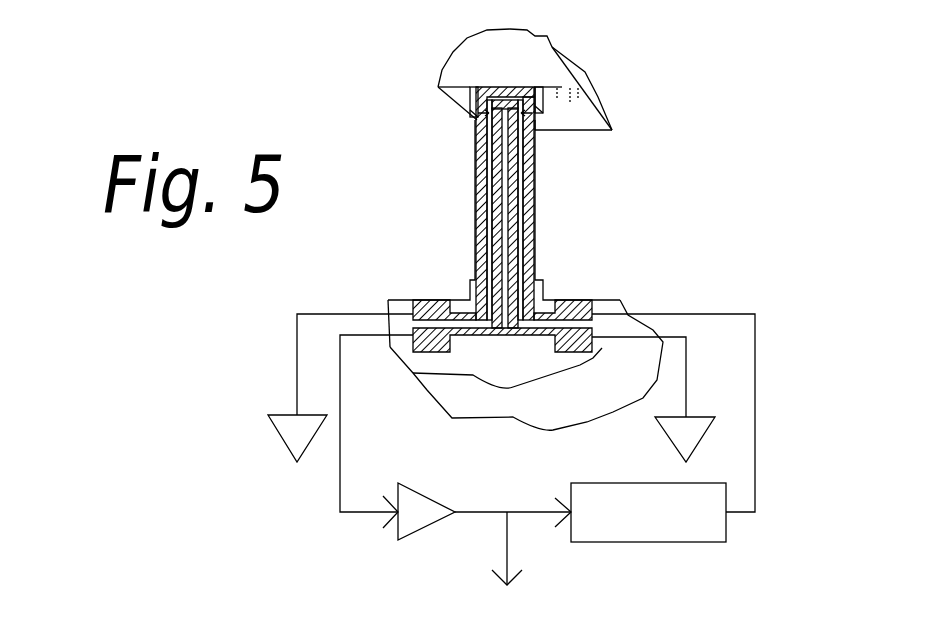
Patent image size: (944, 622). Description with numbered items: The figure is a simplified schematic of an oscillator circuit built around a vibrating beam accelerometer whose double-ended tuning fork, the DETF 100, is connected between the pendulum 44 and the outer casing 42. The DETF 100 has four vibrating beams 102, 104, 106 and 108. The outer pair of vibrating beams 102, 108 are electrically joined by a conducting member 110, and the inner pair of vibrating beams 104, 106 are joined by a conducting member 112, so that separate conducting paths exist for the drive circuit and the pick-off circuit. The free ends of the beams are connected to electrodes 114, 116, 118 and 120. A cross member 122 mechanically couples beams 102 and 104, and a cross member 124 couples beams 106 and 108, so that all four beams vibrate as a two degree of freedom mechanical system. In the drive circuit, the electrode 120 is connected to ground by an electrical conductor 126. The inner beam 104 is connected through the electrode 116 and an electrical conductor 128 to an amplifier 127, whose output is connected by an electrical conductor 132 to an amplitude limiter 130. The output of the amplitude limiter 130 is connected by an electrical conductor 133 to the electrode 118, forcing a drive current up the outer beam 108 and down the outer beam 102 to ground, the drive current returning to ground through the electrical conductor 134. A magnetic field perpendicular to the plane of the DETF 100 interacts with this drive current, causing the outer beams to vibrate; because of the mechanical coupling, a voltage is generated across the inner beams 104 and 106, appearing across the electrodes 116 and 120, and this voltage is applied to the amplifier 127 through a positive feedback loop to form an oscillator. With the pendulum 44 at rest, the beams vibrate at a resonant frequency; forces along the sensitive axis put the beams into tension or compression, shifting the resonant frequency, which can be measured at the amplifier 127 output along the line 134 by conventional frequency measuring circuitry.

The outer casing 42 is at (418, 362).
The pendulum 44 is at (543, 60).
The DETF 100 is at (603, 201).
The vibrating beam 102 is at (476, 160).
The vibrating beam 104 is at (477, 246).
The vibrating beam 106 is at (534, 238).
The vibrating beam 108 is at (534, 172).
The conducting member 110 is at (500, 87).
The conducting member 112 is at (470, 98).
The electrode 114 is at (428, 300).
The electrode 116 is at (448, 350).
The electrode 118 is at (577, 298).
The electrode 120 is at (592, 348).
The cross member 122 is at (476, 212).
The cross member 124 is at (534, 207).
The electrical conductor 126 is at (688, 404).
The amplifier 127 is at (427, 494).
The electrical conductor 128 is at (340, 470).
The amplitude limiter 130 is at (660, 538).
The electrical conductor 132 is at (527, 510).
The electrical conductor 133 is at (757, 402).
The electrical conductor 134 is at (322, 312).